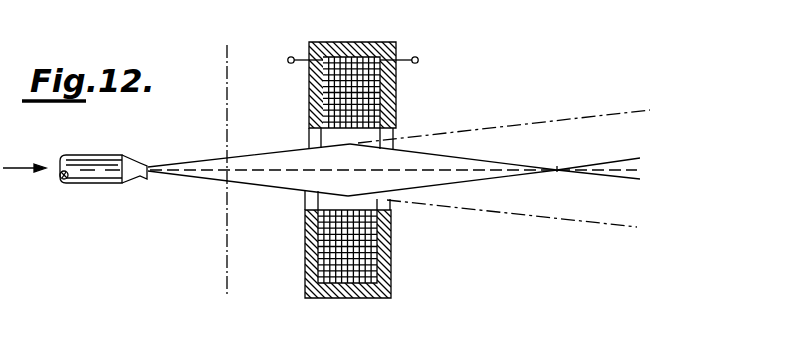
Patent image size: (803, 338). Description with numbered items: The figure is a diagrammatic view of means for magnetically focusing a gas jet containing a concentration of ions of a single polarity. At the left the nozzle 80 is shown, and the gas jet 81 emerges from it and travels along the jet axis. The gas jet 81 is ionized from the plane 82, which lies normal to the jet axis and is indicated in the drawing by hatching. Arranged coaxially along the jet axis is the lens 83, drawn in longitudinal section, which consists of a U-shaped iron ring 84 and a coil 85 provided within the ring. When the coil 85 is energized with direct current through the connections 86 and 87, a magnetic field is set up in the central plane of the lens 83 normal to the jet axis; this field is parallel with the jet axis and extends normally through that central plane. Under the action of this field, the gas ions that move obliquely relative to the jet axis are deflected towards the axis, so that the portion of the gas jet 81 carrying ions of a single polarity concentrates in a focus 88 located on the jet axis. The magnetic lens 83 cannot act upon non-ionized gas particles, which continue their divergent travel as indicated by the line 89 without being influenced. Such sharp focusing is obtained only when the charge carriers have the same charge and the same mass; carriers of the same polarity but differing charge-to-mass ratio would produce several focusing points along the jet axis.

The nozzle 80 is at (88, 176).
The gas jet 81 is at (180, 180).
The plane 82 is at (225, 231).
The lens 83 is at (336, 299).
The U-shaped iron ring 84 is at (345, 44).
The coil 85 is at (371, 85).
The connection 86 is at (295, 57).
The connection 87 is at (412, 58).
The focus 88 is at (556, 169).
The line 89 is at (553, 121).